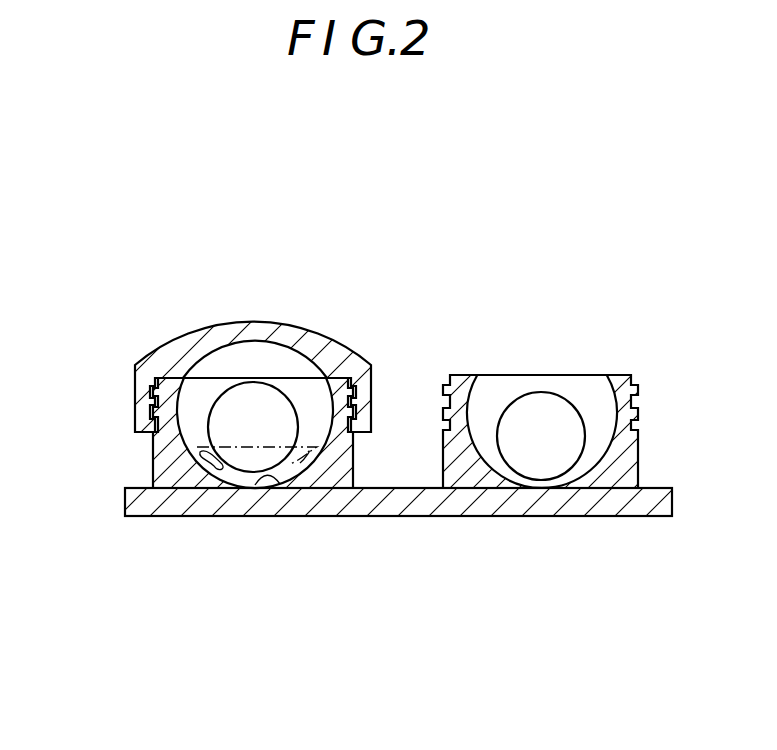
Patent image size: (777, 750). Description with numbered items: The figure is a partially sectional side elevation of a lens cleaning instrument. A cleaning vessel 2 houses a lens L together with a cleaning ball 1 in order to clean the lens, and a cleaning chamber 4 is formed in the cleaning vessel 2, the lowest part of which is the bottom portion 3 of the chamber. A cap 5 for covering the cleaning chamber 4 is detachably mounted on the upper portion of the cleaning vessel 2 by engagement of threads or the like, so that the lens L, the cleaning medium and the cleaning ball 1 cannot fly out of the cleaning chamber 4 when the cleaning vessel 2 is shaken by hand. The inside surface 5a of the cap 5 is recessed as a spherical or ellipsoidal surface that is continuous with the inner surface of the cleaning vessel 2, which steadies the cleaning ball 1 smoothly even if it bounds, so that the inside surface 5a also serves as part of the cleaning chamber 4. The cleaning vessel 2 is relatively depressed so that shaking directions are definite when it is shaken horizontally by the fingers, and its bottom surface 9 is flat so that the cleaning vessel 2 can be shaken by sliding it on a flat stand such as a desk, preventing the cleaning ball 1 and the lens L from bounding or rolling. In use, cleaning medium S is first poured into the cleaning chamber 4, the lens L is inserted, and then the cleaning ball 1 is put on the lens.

The cleaning ball 1 is at (252, 458).
The cleaning vessel 2 is at (633, 422).
The bottom portion of the cleaning chamber 3 is at (277, 478).
The cleaning chamber 4 is at (195, 428).
The cap 5 is at (243, 327).
The inside surface of the cap 5a is at (281, 343).
The bottom surface of the cleaning vessel 9 is at (594, 515).
The cleaning medium S is at (197, 448).
The lens L is at (217, 470).